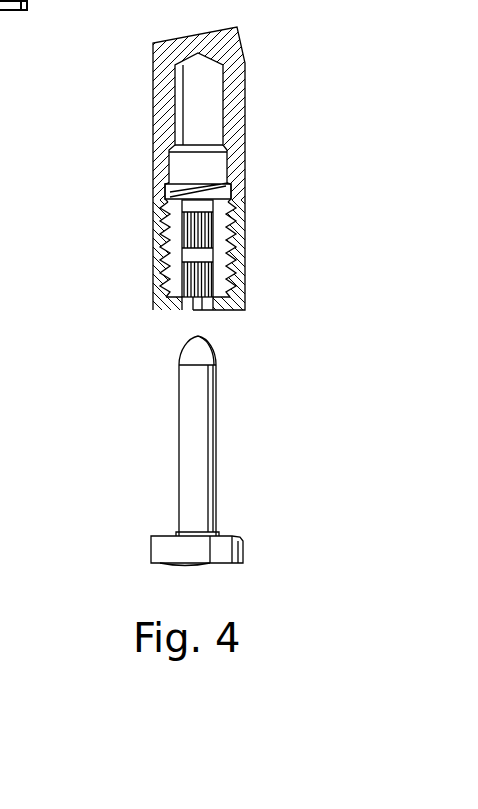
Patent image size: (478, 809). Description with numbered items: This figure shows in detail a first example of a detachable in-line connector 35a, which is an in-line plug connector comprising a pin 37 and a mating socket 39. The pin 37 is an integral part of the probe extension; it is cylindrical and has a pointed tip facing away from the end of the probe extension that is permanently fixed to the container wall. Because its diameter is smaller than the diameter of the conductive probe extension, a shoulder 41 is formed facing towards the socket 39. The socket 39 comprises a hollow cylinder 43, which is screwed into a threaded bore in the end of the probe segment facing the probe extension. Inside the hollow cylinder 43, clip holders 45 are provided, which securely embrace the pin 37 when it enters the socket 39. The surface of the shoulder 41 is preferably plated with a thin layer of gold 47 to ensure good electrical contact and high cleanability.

The in-line connector 35a is at (128, 143).
The pin 37 is at (193, 445).
The socket 39 is at (158, 272).
The shoulder 41 is at (243, 545).
The hollow cylinder 43 is at (220, 249).
The clip holders 45 is at (169, 190).
The layer of gold 47 is at (165, 535).